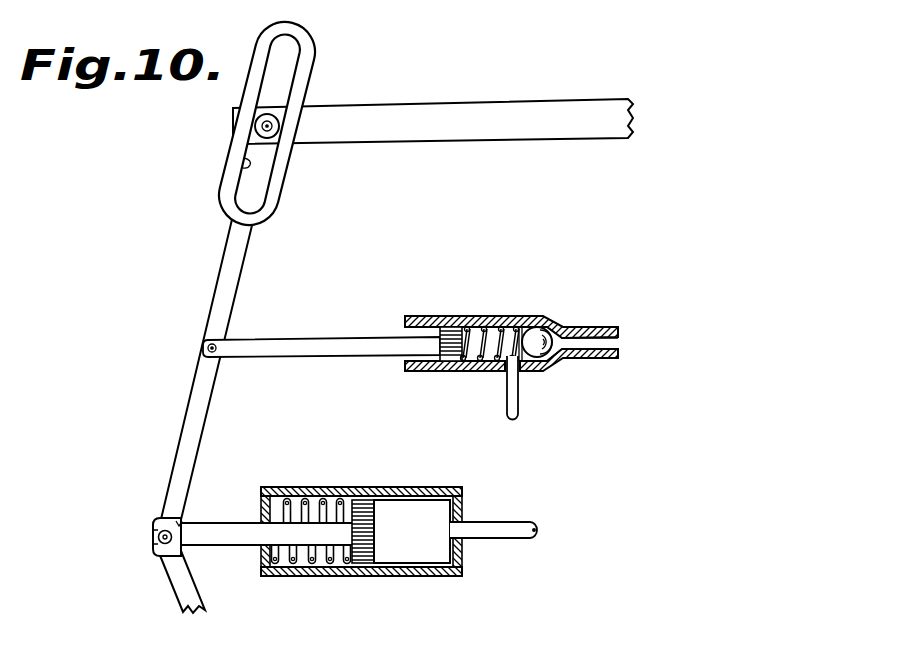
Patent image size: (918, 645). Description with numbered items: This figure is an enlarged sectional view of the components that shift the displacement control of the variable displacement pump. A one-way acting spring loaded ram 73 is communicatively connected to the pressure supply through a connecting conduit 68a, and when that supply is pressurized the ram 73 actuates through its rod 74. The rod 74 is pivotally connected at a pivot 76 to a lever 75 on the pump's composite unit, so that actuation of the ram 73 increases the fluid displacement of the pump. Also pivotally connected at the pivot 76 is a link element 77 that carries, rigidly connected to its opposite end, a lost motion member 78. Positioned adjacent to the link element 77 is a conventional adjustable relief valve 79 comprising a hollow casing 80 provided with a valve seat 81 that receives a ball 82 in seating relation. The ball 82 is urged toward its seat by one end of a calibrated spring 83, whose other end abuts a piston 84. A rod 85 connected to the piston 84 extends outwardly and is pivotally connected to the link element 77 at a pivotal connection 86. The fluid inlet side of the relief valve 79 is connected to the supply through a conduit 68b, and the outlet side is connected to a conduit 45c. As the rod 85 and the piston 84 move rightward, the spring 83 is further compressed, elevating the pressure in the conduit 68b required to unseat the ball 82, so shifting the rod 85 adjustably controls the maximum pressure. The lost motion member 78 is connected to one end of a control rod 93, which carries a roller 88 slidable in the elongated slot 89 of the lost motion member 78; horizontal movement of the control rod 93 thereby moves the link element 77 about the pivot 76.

The conduit 45c is at (516, 404).
The connecting conduit 68a is at (500, 527).
The conduit 68b is at (598, 337).
The ram 73 is at (436, 577).
The rod 74 is at (213, 528).
The lever 75 is at (183, 588).
The pivot 76 is at (160, 522).
The link element 77 is at (195, 405).
The lost motion member 78 is at (276, 190).
The adjustable relief valve 79 is at (462, 315).
The hollow casing 80 is at (502, 323).
The valve seat 81 is at (543, 327).
The ball 82 is at (543, 371).
The calibrated spring 83 is at (478, 327).
The piston 84 is at (448, 373).
The rod 85 is at (300, 343).
The pivotal connection 86 is at (207, 348).
The roller 88 is at (255, 124).
The elongated slot 89 is at (244, 163).
The control rod 93 is at (379, 115).